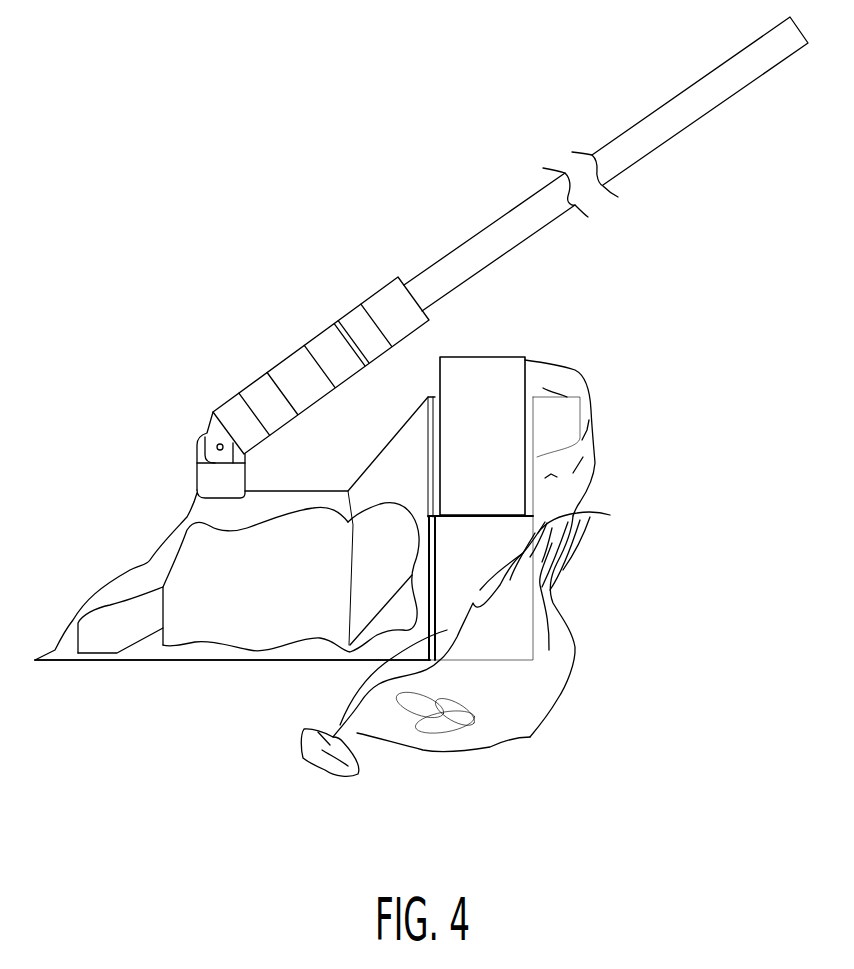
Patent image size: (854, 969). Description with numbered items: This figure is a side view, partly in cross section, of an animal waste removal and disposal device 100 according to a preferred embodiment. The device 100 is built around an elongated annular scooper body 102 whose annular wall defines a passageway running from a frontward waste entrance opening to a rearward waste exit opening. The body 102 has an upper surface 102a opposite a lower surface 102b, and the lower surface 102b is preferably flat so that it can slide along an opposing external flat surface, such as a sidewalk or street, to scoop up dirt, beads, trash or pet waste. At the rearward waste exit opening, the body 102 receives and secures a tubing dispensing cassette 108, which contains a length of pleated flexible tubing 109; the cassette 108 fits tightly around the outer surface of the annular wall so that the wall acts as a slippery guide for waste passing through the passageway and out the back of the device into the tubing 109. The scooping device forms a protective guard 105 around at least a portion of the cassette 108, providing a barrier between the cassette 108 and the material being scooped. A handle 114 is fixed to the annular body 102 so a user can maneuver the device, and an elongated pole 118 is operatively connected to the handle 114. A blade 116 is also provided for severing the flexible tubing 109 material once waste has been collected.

The animal waste removal and disposal device 100 is at (308, 110).
The elongated annular scooper body 102 is at (175, 650).
The upper surface 102a is at (437, 397).
The lower surface 102b is at (233, 661).
The protective guard 105 is at (448, 625).
The tubing dispensing cassette 108 is at (495, 357).
The pleated flexible tubing 109 is at (563, 680).
The handle 114 is at (305, 367).
The blade 116 is at (573, 514).
The elongated pole 118 is at (474, 243).